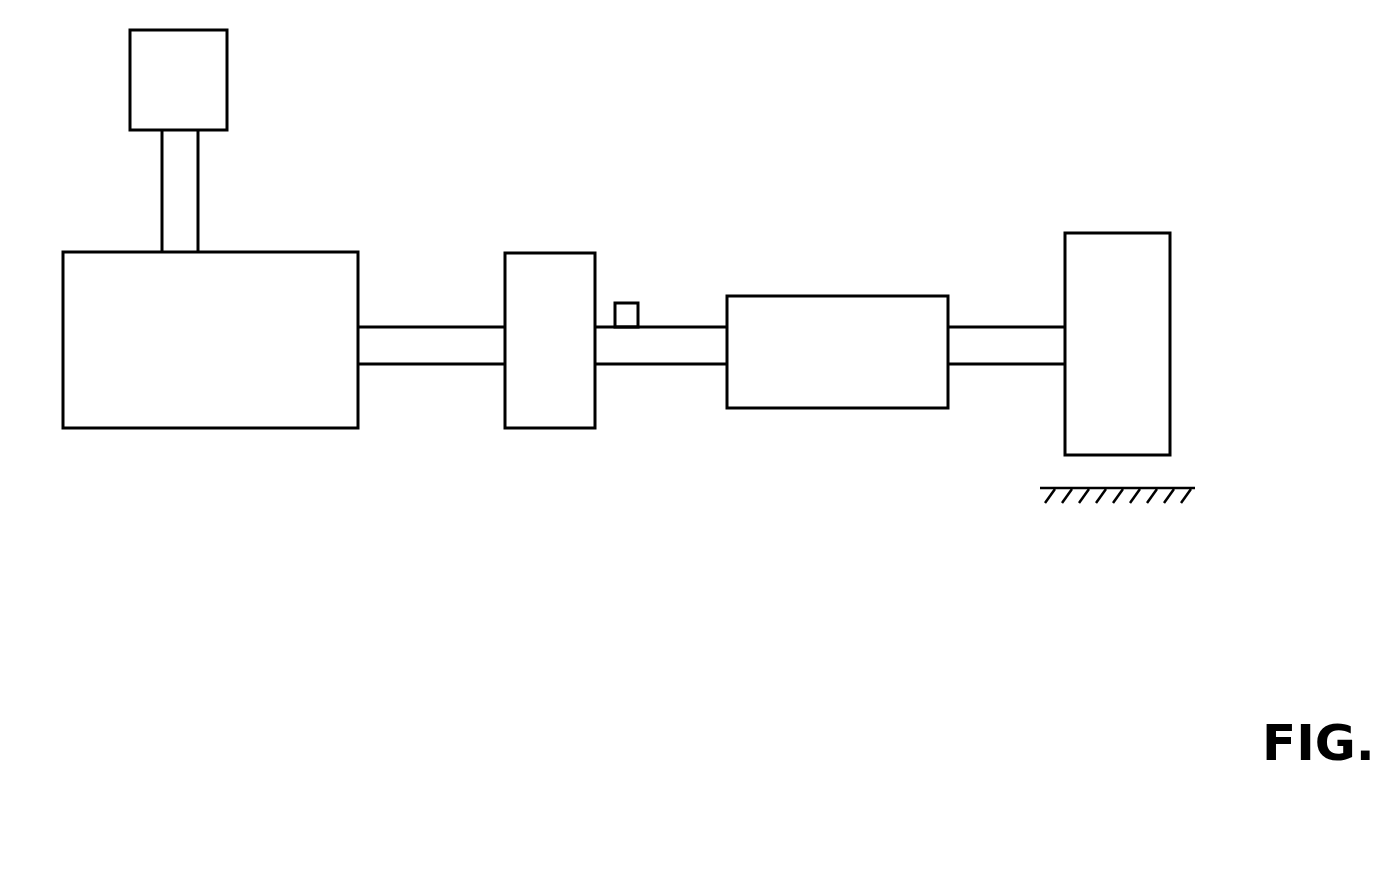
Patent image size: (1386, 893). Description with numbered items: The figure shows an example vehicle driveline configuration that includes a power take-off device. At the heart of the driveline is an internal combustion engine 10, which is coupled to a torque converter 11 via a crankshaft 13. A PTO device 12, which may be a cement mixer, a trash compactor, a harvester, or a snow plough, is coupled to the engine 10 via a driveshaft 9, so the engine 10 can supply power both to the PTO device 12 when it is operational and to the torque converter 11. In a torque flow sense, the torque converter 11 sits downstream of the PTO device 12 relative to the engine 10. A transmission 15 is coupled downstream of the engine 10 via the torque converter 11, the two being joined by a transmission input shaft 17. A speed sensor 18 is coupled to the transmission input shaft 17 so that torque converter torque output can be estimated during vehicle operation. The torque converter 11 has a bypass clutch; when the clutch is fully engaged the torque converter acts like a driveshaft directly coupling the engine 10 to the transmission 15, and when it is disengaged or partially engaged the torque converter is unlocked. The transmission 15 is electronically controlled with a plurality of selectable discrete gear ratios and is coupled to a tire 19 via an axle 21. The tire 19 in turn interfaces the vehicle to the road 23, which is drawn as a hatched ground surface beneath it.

The driveshaft 9 is at (198, 190).
The internal combustion engine 10 is at (210, 340).
The torque converter 11 is at (550, 340).
The PTO device 12 is at (178, 80).
The crankshaft 13 is at (432, 364).
The transmission 15 is at (837, 352).
The transmission input shaft 17 is at (662, 364).
The speed sensor 18 is at (627, 303).
The tire 19 is at (1117, 344).
The axle 21 is at (1005, 364).
The road 23 is at (1177, 488).